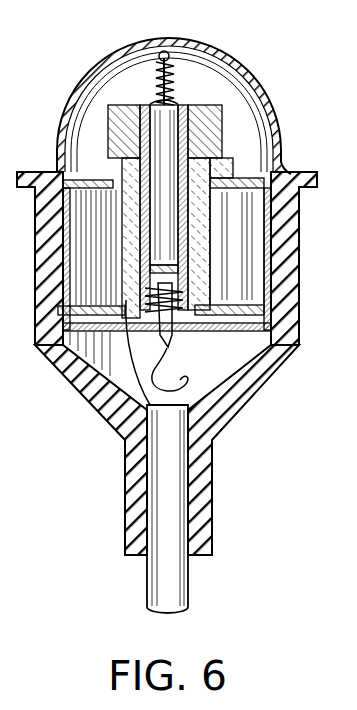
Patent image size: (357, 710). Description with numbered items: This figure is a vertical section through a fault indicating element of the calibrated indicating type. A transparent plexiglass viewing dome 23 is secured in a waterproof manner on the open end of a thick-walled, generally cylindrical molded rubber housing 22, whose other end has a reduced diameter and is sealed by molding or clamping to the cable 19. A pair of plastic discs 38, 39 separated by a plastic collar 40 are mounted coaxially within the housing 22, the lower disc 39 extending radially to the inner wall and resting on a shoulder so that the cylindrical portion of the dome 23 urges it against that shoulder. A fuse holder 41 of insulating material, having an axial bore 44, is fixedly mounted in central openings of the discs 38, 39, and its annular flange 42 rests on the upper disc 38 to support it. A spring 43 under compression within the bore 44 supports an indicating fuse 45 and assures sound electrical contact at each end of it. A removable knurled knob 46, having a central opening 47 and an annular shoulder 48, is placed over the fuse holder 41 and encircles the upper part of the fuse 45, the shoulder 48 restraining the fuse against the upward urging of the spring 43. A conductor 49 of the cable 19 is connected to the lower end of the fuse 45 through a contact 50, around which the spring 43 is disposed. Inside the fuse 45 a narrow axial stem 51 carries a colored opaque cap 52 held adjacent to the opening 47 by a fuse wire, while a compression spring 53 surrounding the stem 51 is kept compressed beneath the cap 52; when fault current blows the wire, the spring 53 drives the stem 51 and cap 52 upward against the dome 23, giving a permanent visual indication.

The cable 19 is at (186, 588).
The housing 22 is at (208, 487).
The viewing dome 23 is at (76, 87).
The plastic disc 38 is at (282, 170).
The plastic disc 39 is at (272, 328).
The plastic collar 40 is at (267, 255).
The fuse holder 41 is at (204, 206).
The annular flange 42 is at (226, 163).
The spring 43 is at (190, 292).
The axial bore 44 is at (172, 242).
The fuse 45 is at (157, 241).
The knurled knob 46 is at (218, 105).
The central opening 47 is at (222, 58).
The annular shoulder 48 is at (118, 62).
The conductor 49 is at (187, 380).
The contact 50 is at (170, 343).
The axial stem 51 is at (181, 76).
The colored cap 52 is at (167, 53).
The compression spring 53 is at (158, 100).